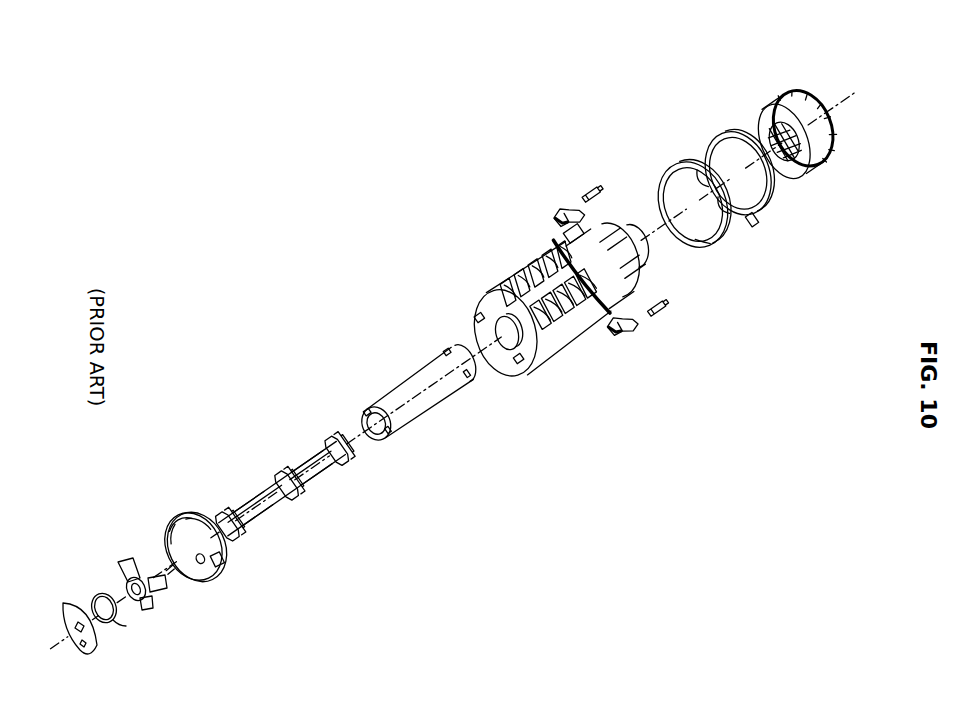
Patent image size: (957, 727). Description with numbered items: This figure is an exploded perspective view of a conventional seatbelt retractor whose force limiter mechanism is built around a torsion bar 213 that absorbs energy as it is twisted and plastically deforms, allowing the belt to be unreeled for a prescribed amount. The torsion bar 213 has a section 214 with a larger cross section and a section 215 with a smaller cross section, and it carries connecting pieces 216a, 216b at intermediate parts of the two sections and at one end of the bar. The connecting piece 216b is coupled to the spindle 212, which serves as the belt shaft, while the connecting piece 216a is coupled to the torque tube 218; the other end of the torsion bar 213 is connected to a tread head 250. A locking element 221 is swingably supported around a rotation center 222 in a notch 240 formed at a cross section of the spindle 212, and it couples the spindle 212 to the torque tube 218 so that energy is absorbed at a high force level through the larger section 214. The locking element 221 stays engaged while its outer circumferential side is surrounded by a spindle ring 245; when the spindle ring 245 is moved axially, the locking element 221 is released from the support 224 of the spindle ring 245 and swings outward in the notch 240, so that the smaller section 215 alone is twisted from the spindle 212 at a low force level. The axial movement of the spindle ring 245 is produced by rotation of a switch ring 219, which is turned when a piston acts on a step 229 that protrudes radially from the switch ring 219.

The spindle 212 is at (540, 362).
The torsion bar 213 is at (283, 520).
The section having a larger cross section 214 is at (250, 500).
The section having a smaller cross section 215 is at (290, 468).
The connecting piece 216a is at (281, 468).
The connecting piece 216b is at (352, 457).
The torque tube 218 is at (410, 380).
The switch ring 219 is at (773, 193).
The locking element 221 is at (565, 208).
The rotation center 222 is at (592, 190).
The support 224 is at (687, 167).
The step 229 is at (752, 220).
The notch 240 is at (601, 235).
The spindle ring 245 is at (718, 238).
The tread head 250 is at (207, 587).